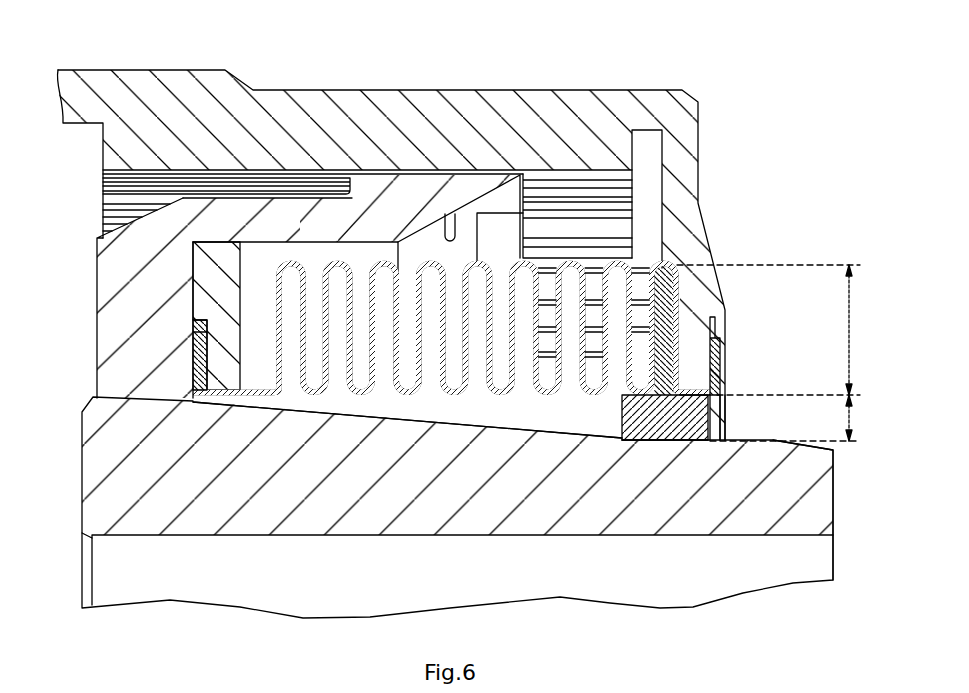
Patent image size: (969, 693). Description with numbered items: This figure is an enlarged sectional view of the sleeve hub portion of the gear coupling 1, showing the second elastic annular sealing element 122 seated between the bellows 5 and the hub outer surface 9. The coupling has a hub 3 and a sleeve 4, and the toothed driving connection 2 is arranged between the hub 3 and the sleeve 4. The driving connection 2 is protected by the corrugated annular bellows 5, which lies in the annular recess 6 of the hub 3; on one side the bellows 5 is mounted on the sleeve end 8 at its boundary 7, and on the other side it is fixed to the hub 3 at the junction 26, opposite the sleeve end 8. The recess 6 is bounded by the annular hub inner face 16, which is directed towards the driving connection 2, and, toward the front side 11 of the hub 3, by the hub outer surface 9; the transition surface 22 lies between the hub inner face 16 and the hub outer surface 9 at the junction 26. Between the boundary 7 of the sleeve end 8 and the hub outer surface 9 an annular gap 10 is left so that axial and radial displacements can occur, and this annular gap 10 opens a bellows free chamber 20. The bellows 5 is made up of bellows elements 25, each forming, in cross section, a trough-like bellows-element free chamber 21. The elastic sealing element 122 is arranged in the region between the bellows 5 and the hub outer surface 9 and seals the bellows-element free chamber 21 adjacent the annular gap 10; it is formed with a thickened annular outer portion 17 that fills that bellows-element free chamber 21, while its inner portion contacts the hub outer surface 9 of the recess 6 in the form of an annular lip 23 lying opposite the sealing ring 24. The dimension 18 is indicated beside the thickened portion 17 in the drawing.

The gear coupling 1 is at (788, 109).
The driving connection 2 is at (364, 181).
The hub 3 is at (130, 356).
The sleeve 4 is at (683, 90).
The bellows 5 is at (386, 250).
The recess 6 is at (423, 246).
The boundary 7 is at (693, 377).
The sleeve end 8 is at (707, 293).
The hub outer surface 9 is at (807, 449).
The annular gap 10 is at (715, 422).
The front side 11 is at (837, 517).
The hub inner face 16 is at (452, 228).
The thickened annular outer portion 17 is at (860, 330).
The height of block 18 is at (860, 420).
The bellows free chamber 20 is at (503, 408).
The bellows-element free chamber 21 is at (399, 288).
The transition surface 22 is at (193, 330).
The annular lip 23 is at (678, 278).
The sealing ring 24 is at (667, 443).
The bellows element 25 is at (327, 277).
The junction 26 is at (190, 352).
The second elastic annular sealing element 122 is at (650, 443).